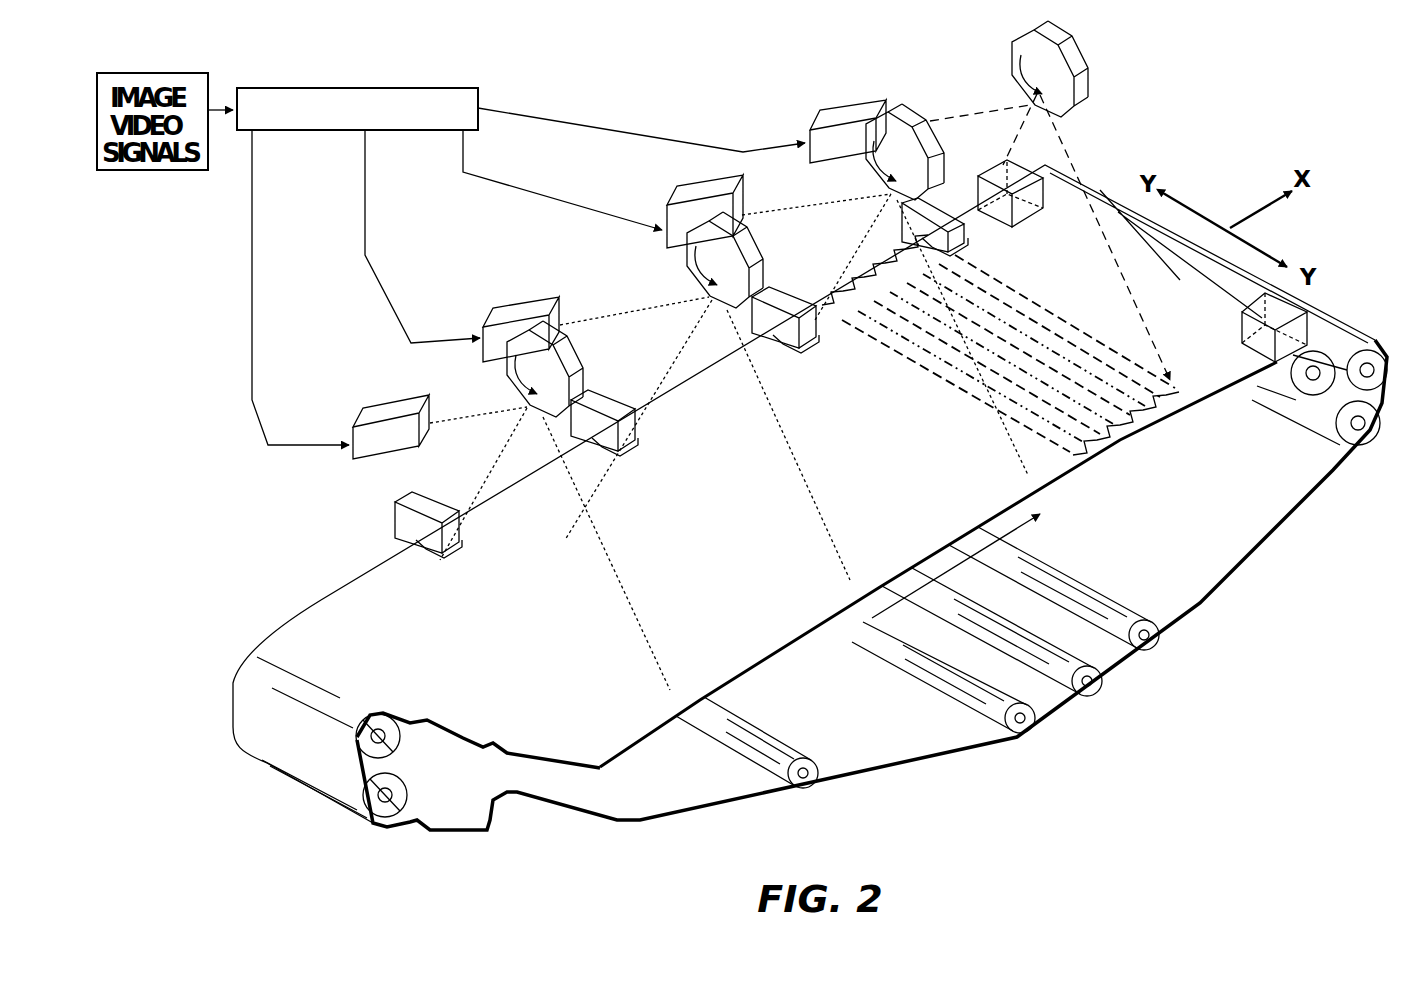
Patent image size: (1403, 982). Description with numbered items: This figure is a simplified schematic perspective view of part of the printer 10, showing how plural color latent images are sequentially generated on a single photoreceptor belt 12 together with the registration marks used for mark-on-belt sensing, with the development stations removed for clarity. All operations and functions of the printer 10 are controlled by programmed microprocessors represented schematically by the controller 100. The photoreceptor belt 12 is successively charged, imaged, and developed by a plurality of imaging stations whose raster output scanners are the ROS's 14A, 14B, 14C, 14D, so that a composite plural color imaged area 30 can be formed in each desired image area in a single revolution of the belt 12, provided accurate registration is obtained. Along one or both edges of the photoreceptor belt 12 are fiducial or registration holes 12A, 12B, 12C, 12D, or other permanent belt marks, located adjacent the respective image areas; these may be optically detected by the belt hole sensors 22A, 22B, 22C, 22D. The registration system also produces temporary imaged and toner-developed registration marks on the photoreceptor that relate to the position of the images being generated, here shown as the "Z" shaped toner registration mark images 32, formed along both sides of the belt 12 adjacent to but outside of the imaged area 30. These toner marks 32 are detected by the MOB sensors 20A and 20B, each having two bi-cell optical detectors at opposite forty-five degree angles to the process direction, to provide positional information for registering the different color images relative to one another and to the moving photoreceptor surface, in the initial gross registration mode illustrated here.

The printer 10 is at (1278, 575).
The photoreceptor belt 12 is at (903, 750).
The registration hole 12A is at (972, 231).
The registration hole 12B is at (817, 326).
The registration hole 12C is at (640, 424).
The registration hole 12D is at (465, 534).
The ROS 14A is at (877, 92).
The ROS 14B is at (739, 182).
The ROS 14C is at (576, 300).
The ROS 14D is at (421, 397).
The MOB sensor 20A is at (1284, 312).
The MOB sensor 20B is at (1027, 174).
The belt hole sensor 22A is at (904, 230).
The belt hole sensor 22B is at (773, 318).
The belt hole sensor 22C is at (590, 423).
The belt hole sensor 22D is at (411, 538).
The composite plural color imaged area 30 is at (1062, 412).
The "Z" shaped toner registration mark images 32 is at (842, 292).
The controller 100 is at (473, 88).